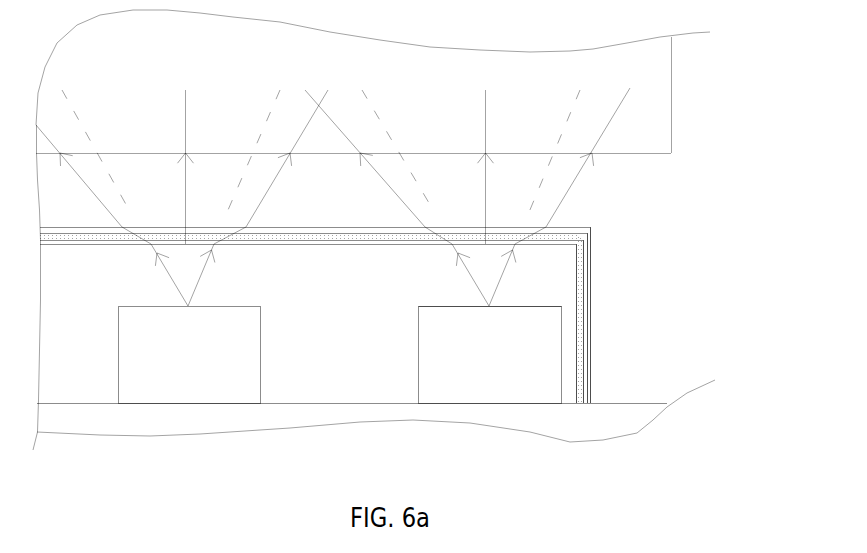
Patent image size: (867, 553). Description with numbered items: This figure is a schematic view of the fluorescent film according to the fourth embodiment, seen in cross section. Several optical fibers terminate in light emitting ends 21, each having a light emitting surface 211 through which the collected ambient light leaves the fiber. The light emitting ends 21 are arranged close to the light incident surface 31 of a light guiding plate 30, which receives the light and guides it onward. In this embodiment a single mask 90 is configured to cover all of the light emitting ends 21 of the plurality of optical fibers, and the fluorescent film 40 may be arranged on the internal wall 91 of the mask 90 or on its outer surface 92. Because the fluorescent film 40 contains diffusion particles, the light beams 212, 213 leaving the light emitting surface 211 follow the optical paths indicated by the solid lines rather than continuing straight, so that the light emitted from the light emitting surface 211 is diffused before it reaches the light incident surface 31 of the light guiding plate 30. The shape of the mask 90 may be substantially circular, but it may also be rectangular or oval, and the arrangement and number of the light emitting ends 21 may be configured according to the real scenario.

The light guiding plate 30 is at (628, 68).
The light incident surface 31 is at (610, 153).
The fluorescent film 40 is at (582, 235).
The light emitting end 21 is at (465, 363).
The light emitting surface 211 is at (543, 307).
The light beam 212 is at (475, 280).
The light beam 213 is at (497, 281).
The mask 90 is at (589, 343).
The outer surface 92 is at (590, 376).
The internal wall 91 is at (582, 385).